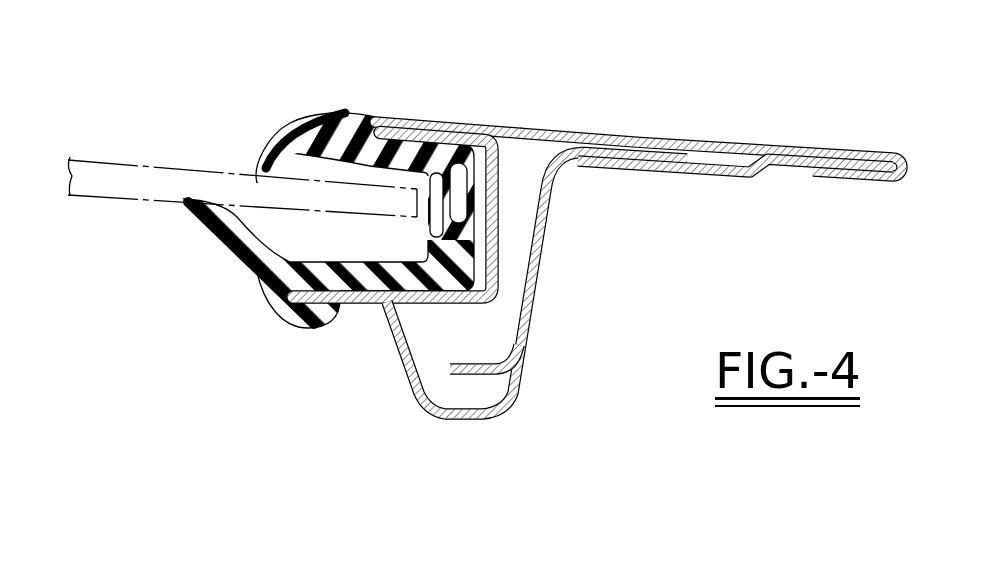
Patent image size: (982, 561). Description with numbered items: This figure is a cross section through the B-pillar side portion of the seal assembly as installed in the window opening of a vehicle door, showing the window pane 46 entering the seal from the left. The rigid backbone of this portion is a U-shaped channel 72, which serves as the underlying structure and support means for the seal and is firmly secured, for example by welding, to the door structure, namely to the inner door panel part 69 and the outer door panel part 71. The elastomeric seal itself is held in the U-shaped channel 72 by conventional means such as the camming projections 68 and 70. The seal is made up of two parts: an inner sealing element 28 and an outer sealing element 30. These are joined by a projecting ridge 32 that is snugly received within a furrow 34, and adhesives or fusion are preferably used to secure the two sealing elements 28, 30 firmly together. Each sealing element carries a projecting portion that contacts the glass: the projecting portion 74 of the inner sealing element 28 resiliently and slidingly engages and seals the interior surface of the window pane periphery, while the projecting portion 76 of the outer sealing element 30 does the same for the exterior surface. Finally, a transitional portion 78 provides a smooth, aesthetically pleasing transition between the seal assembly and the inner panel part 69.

The rod 46 is at (136, 167).
The projecting portion 76 is at (287, 130).
The outer sealing element 30 is at (390, 145).
The camming projection 68 is at (448, 128).
The outer door panel part 71 is at (552, 125).
The projecting ridge 32 is at (447, 212).
The furrow 34 is at (445, 213).
The projecting portion 74 is at (230, 243).
The transitional portion 78 is at (318, 327).
The inner sealing element 28 is at (378, 302).
The U-shaped channel 72 is at (487, 303).
The camming projection 70 is at (438, 304).
The inner door panel part 69 is at (437, 415).